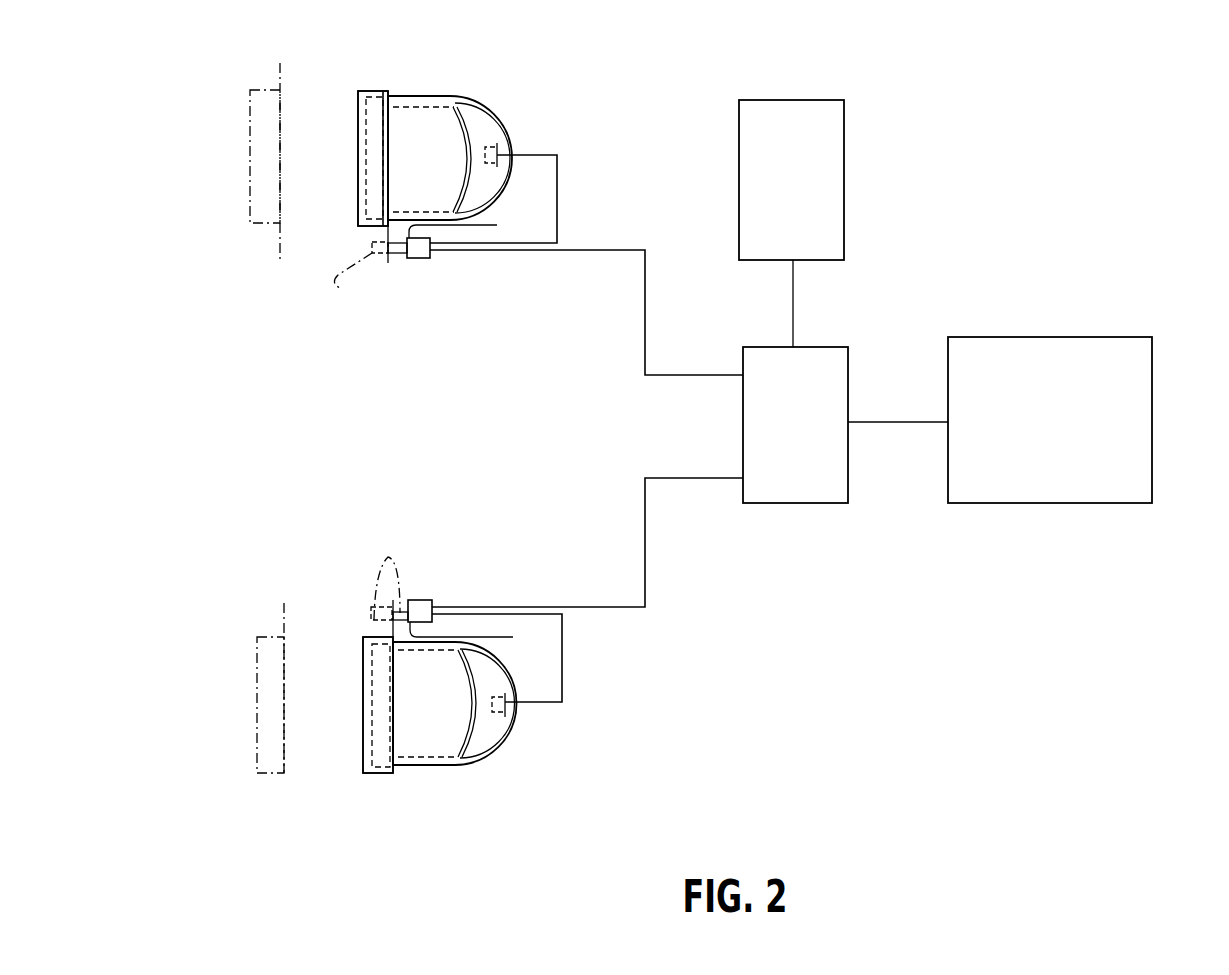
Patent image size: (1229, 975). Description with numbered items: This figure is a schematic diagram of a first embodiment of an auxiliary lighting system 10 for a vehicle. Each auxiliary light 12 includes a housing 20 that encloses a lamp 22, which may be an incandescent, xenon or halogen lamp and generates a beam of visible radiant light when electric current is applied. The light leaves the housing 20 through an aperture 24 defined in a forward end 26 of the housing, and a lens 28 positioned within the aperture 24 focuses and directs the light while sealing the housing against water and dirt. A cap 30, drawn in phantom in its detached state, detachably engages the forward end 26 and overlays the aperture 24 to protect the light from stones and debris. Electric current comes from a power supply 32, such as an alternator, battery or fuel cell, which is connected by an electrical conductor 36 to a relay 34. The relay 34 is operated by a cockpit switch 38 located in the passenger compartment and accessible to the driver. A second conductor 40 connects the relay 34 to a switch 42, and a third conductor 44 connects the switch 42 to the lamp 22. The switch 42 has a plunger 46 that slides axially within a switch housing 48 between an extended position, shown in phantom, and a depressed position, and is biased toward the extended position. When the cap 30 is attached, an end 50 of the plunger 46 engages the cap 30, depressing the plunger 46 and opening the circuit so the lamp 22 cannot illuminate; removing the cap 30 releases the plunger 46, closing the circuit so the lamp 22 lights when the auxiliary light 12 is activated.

The auxiliary lighting system 10 is at (900, 116).
The auxiliary light 12 is at (470, 82).
The housing 20 is at (425, 95).
The lamp 22 is at (505, 138).
The aperture 24 is at (373, 168).
The forward end 26 is at (380, 90).
The lens 28 is at (358, 141).
The cap 30 is at (262, 88).
The power supply 32 is at (1155, 400).
The relay 34 is at (785, 504).
The electrical conductor 36 is at (893, 420).
The cockpit switch 38 is at (845, 182).
The second conductor 40 is at (645, 332).
The switch 42 is at (411, 276).
The third conductor 44 is at (558, 172).
The plunger 46 is at (397, 258).
The switch housing 48 is at (425, 258).
The end of plunger 50 is at (372, 248).